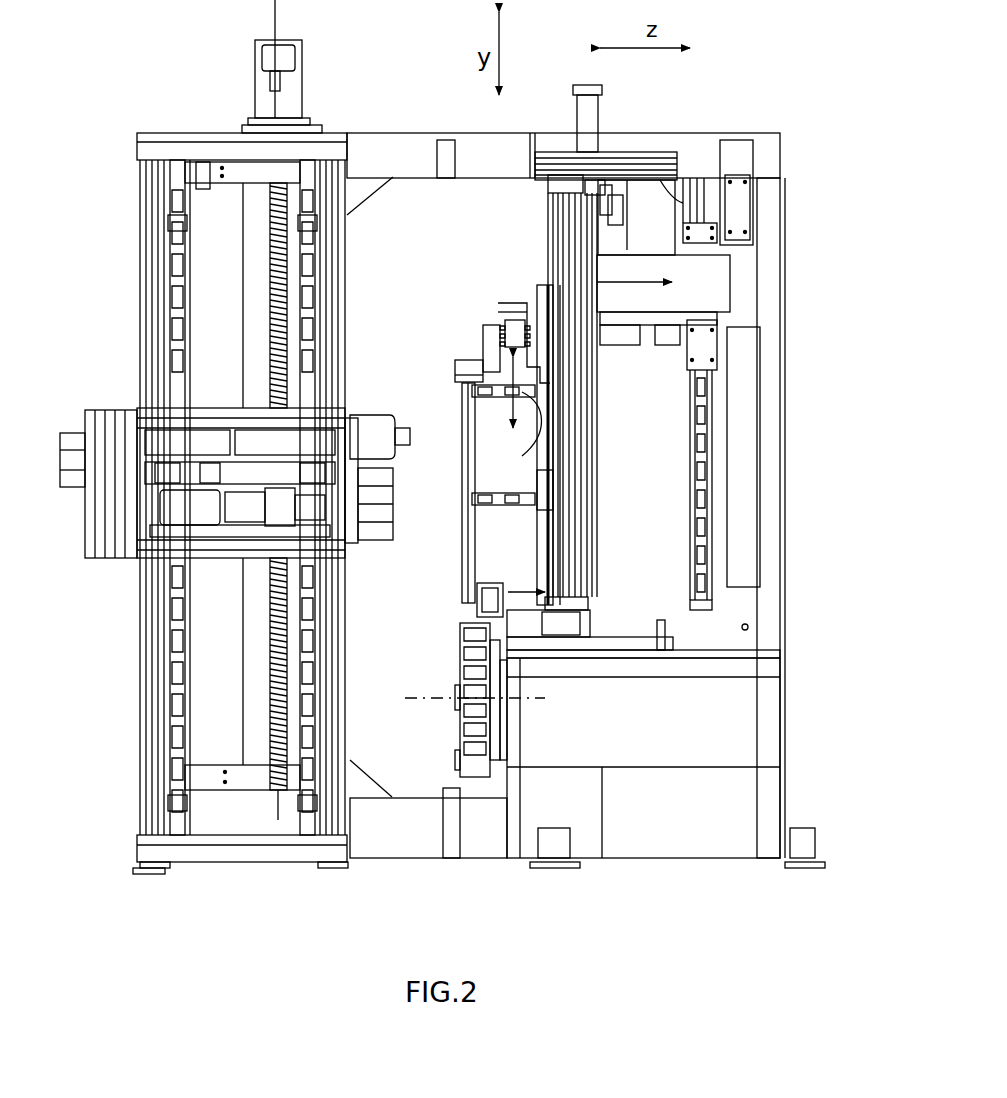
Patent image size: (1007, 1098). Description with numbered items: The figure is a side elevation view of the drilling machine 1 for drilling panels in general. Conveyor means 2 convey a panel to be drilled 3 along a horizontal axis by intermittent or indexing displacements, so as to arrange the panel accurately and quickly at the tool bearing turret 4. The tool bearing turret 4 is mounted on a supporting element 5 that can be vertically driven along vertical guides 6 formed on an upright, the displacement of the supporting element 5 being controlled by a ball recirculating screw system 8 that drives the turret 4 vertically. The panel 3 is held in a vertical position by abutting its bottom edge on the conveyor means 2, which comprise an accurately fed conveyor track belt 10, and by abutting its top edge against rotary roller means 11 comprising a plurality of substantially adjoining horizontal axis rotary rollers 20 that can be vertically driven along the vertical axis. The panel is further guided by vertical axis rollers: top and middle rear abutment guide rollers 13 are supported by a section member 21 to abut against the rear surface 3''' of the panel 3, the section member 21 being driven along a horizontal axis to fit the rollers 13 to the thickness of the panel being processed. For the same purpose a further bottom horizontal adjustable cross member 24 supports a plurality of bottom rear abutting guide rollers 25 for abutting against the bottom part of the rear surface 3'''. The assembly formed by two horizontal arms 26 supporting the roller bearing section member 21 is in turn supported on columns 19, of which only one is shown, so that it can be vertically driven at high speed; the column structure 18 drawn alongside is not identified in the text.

The drilling machine 1 is at (124, 196).
The conveyor means 2 is at (458, 668).
The panel to be drilled 3 is at (440, 493).
The rear surface of the panel 3''' is at (562, 445).
The tool bearing turret 4 is at (375, 545).
The supporting element 5 is at (215, 537).
The vertical guides 6 is at (165, 768).
The ball recirculating screw system 8 is at (268, 283).
The conveyor track belt 10 is at (485, 733).
The rotary roller means 11 is at (462, 300).
The rear abutment guide rollers 13 is at (470, 398).
The vertical column 18 is at (585, 572).
The columns 19 is at (717, 505).
The horizontal axis rotary rollers 20 is at (468, 370).
The section member 21 is at (505, 316).
The bottom horizontal adjustable cross member 24 is at (590, 600).
The bottom rear abutting guide rollers 25 is at (478, 600).
The horizontal arms 26 is at (710, 292).